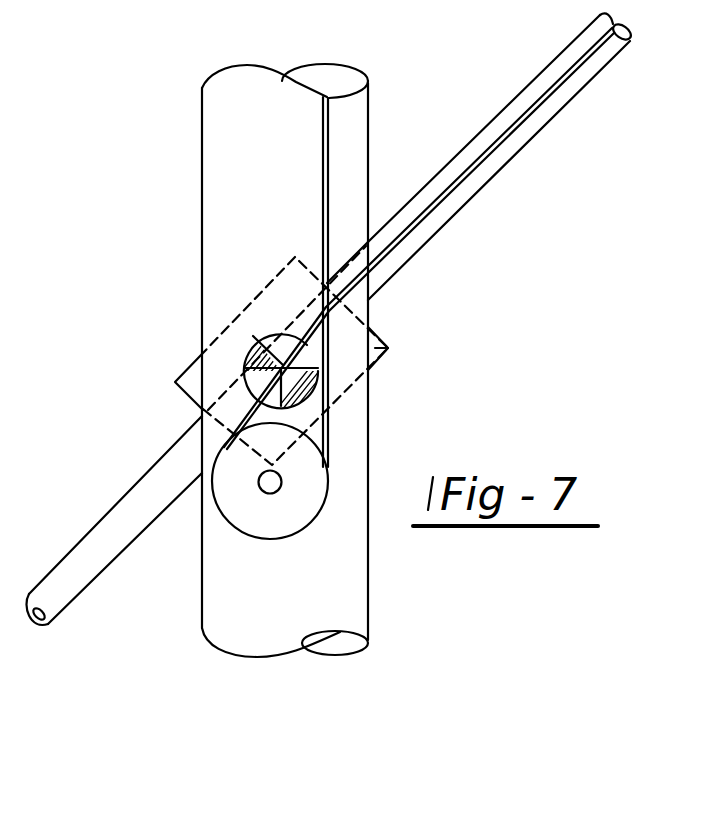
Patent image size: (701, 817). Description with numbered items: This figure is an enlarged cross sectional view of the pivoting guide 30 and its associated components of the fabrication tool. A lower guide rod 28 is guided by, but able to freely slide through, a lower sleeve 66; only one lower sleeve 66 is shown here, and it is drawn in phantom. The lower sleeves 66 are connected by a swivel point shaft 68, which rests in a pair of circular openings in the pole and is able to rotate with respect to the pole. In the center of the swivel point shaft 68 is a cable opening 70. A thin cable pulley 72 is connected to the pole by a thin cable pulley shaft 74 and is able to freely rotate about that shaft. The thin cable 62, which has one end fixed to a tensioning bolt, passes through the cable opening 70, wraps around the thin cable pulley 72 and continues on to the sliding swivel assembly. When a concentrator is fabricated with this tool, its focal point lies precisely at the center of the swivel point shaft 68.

The lower guide rod 28 is at (135, 502).
The pivoting guide 30 is at (432, 329).
The thin cable 62 is at (387, 257).
The lower sleeve 66 is at (390, 347).
The swivel point shaft 68 is at (264, 322).
The cable opening 70 is at (318, 372).
The thin cable pulley 72 is at (287, 512).
The thin cable pulley shaft 74 is at (268, 492).